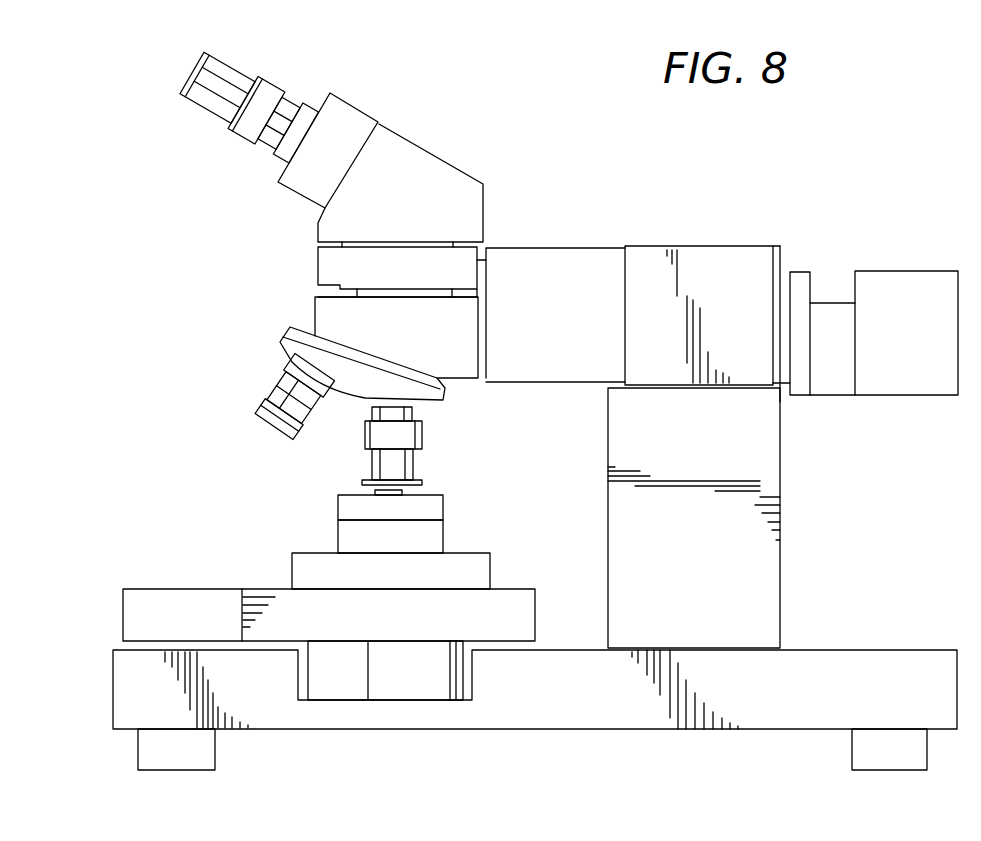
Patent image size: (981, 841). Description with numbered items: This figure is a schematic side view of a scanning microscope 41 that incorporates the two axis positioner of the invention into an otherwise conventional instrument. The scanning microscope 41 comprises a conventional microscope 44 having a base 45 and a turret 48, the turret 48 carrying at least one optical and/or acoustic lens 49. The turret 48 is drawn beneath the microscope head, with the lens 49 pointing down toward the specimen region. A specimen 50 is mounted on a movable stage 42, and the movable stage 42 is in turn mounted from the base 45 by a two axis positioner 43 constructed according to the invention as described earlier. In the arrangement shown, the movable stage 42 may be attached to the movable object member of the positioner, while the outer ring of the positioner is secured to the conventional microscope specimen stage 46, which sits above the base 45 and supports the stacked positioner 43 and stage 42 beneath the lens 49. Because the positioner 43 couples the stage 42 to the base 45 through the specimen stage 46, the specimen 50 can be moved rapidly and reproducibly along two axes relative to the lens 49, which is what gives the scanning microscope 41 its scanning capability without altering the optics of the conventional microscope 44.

The scanning microscope 41 is at (224, 326).
The movable stage 42 is at (340, 498).
The two axis positioner 43 is at (340, 515).
The conventional microscope 44 is at (718, 253).
The base 45 is at (538, 713).
The conventional microscope specimen stage 46 is at (280, 603).
The turret 48 is at (287, 332).
The lens 49 is at (270, 395).
The specimen 50 is at (373, 492).